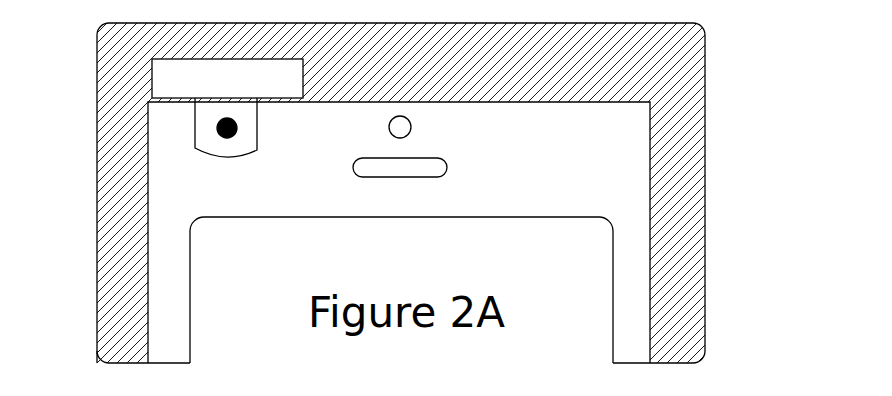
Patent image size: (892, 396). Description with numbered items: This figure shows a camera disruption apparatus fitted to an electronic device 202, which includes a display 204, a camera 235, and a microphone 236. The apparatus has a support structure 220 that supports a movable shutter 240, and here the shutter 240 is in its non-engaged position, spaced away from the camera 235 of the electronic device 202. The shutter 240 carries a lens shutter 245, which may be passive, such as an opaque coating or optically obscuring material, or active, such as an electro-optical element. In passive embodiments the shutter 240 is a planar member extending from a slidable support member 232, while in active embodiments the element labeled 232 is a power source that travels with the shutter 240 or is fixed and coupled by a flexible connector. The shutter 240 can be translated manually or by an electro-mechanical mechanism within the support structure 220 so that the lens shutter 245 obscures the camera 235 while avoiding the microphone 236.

The support structure 220 is at (660, 77).
The electronic device 202 is at (650, 183).
The display 204 is at (613, 278).
The slidable support member 232 is at (248, 90).
The shutter 240 is at (203, 133).
The lens shutter 245 is at (216, 124).
The camera 235 is at (412, 122).
The microphone 236 is at (447, 168).